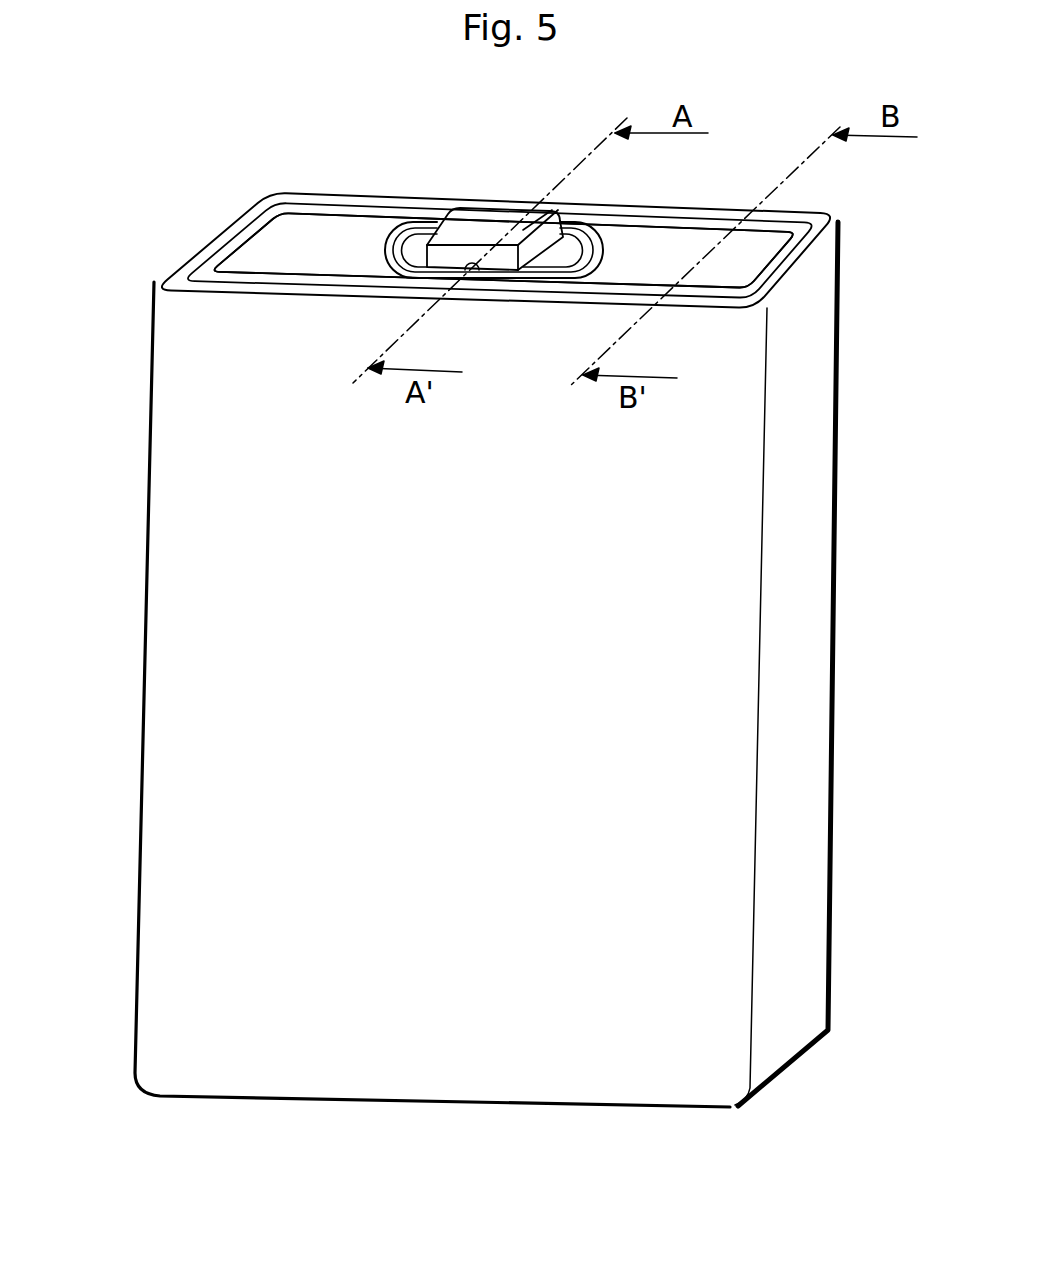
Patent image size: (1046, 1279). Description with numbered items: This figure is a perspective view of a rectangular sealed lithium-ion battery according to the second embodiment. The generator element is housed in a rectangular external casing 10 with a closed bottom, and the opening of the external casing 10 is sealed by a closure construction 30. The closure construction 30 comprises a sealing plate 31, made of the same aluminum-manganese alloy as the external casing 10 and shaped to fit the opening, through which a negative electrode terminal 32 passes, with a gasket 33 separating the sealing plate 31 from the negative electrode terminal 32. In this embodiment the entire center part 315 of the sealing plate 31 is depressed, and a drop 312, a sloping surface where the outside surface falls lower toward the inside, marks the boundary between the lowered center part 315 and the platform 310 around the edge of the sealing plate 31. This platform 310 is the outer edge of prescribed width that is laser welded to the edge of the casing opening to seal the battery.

The external casing 10 is at (177, 689).
The closure construction 30 is at (310, 248).
The sealing plate 31 is at (361, 247).
The negative electrode terminal 32 is at (488, 222).
The gasket 33 is at (571, 223).
The platform 310 is at (790, 216).
The drop 312 is at (276, 218).
The center part 315 is at (238, 252).